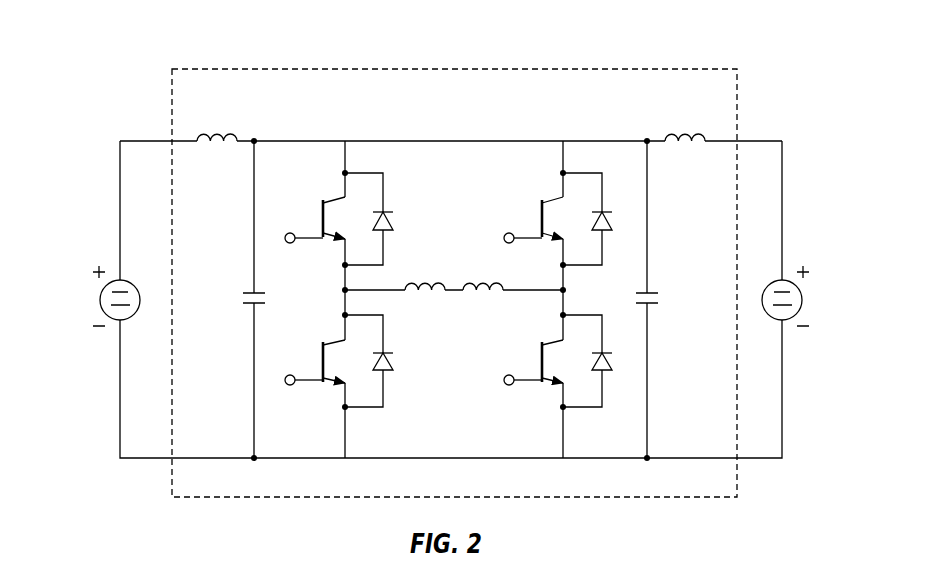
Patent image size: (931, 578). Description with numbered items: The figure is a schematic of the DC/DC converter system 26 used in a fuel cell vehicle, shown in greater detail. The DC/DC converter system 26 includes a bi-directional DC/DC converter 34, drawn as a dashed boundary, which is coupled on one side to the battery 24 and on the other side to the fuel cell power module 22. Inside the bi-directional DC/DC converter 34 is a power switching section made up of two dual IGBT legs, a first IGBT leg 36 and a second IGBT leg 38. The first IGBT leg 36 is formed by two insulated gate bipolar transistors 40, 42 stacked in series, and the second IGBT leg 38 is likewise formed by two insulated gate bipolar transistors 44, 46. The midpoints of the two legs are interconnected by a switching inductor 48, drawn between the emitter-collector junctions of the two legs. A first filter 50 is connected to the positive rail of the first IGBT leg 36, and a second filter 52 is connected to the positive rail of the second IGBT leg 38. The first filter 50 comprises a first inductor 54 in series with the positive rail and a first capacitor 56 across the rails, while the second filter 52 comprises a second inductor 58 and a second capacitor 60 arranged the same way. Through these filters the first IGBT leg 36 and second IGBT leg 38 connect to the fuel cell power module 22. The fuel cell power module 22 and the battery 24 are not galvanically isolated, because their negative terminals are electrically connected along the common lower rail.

The fuel cell power module 22 is at (802, 298).
The battery 24 is at (100, 298).
The DC/DC converter system 26 is at (483, 254).
The bi-directional DC/DC converter 34 is at (224, 67).
The first IGBT leg 36 is at (398, 266).
The second IGBT leg 38 is at (539, 297).
The insulated gate bipolar transistor 40 is at (323, 202).
The insulated gate bipolar transistor 42 is at (323, 344).
The insulated gate bipolar transistor 44 is at (542, 202).
The insulated gate bipolar transistor 46 is at (542, 344).
The switching inductor 48 is at (452, 292).
The first filter 50 is at (259, 134).
The second filter 52 is at (642, 134).
The first inductor 54 is at (213, 124).
The first capacitor 56 is at (246, 310).
The second inductor 58 is at (681, 124).
The second capacitor 60 is at (658, 311).